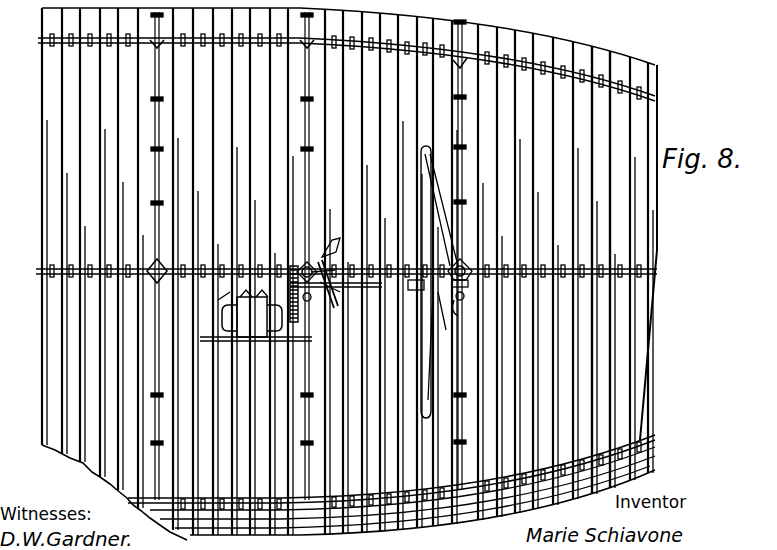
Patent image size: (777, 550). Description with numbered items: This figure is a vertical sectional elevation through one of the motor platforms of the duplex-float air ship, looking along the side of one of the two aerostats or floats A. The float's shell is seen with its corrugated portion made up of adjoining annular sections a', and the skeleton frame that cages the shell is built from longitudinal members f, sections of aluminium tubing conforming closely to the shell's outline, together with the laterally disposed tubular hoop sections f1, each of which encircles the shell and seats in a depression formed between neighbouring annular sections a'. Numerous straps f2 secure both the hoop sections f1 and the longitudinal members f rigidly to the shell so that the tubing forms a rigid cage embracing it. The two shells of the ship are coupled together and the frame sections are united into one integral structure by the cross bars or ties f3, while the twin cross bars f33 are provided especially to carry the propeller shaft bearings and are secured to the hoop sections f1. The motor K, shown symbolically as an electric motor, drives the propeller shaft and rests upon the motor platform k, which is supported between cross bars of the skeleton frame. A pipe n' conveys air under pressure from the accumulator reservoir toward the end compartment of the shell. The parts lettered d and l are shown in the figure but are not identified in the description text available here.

The aerostat or float A is at (333, 274).
The annular section of the corrugated shell a' is at (501, 298).
The longitudinal member of the skeleton frame f is at (40, 272).
The tubular hoop section f1 is at (318, 60).
The strap f2 is at (414, 47).
The cross bar or tie f3 is at (158, 118).
The twin cross bar f33 is at (468, 268).
The band connector d is at (166, 266).
The motor K is at (250, 313).
The motor platform k is at (244, 342).
The lever l is at (320, 306).
The compressed-air pipe n' is at (401, 454).